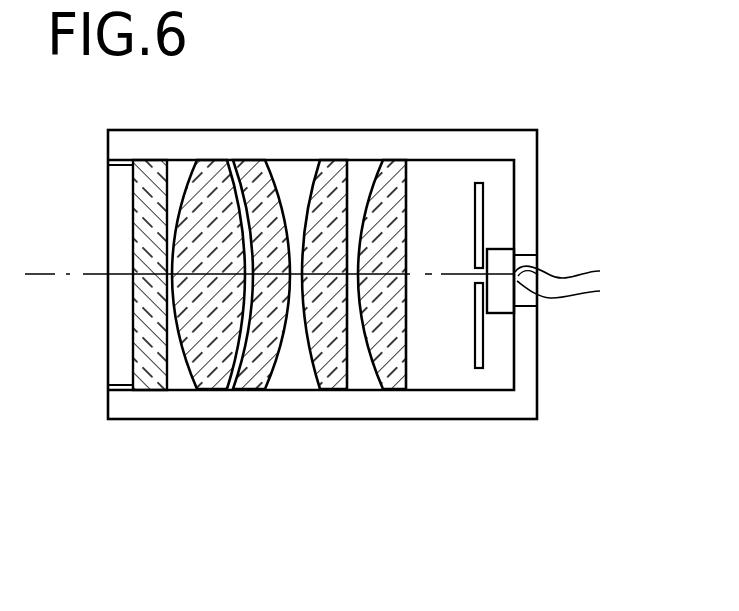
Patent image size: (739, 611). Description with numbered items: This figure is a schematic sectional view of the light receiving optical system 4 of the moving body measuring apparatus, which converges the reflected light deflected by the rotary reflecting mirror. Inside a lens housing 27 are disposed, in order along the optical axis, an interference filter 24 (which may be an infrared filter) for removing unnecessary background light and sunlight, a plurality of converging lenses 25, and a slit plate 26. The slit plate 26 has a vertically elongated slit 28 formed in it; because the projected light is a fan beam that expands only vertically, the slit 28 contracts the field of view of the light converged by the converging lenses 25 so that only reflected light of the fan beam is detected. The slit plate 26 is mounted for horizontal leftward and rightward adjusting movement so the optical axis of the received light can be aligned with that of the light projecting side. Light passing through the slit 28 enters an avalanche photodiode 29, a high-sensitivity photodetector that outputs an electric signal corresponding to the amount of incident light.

The light receiving optical system 4 is at (412, 486).
The interference filter 24 is at (143, 348).
The converging lenses 25 is at (388, 352).
The slit plate 26 is at (473, 335).
The lens housing 27 is at (484, 420).
The slit 28 is at (474, 268).
The avalanche photodiode 29 is at (528, 293).